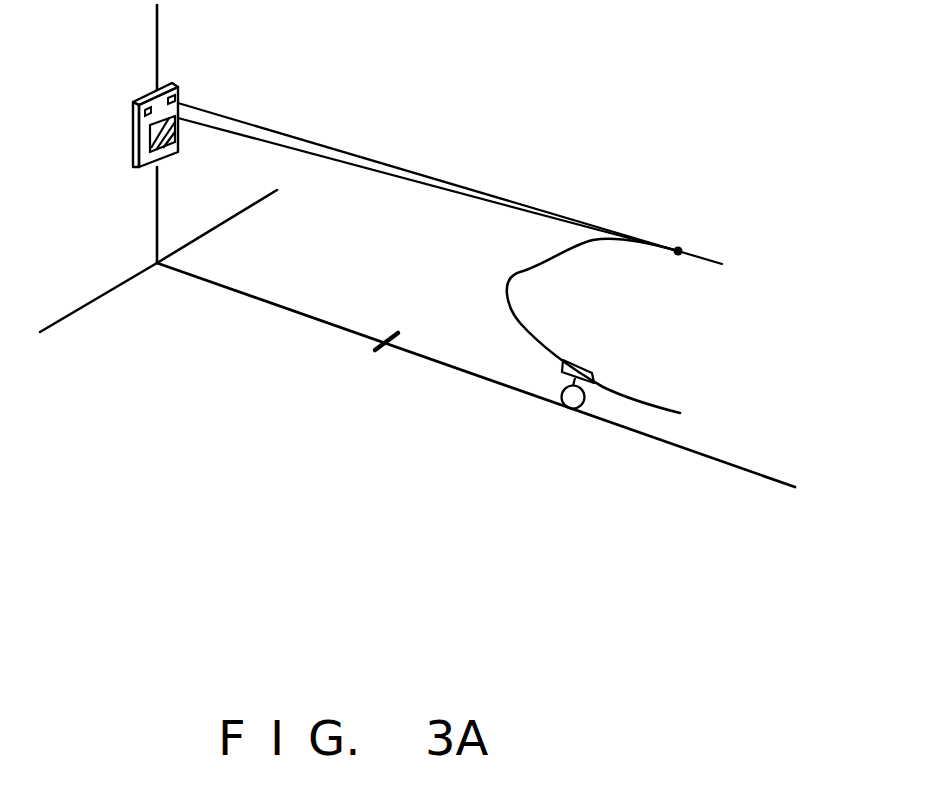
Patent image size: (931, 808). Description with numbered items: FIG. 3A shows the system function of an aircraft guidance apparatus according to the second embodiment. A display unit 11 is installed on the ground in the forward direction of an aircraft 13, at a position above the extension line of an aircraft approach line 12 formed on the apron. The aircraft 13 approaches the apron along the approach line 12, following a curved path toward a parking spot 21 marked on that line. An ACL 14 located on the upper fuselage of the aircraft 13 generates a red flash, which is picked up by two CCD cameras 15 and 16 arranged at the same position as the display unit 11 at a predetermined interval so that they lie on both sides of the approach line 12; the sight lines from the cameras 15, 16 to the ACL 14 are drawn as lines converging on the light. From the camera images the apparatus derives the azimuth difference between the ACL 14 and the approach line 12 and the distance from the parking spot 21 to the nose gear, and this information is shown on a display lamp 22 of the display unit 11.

The display unit 11 is at (140, 100).
The aircraft approach line 12 is at (717, 458).
The aircraft 13 is at (510, 278).
The ACL 14 is at (687, 243).
The CCD camera 15 is at (137, 117).
The CCD camera 16 is at (178, 92).
The parking spot 21 is at (380, 353).
The display lamp 22 is at (178, 138).